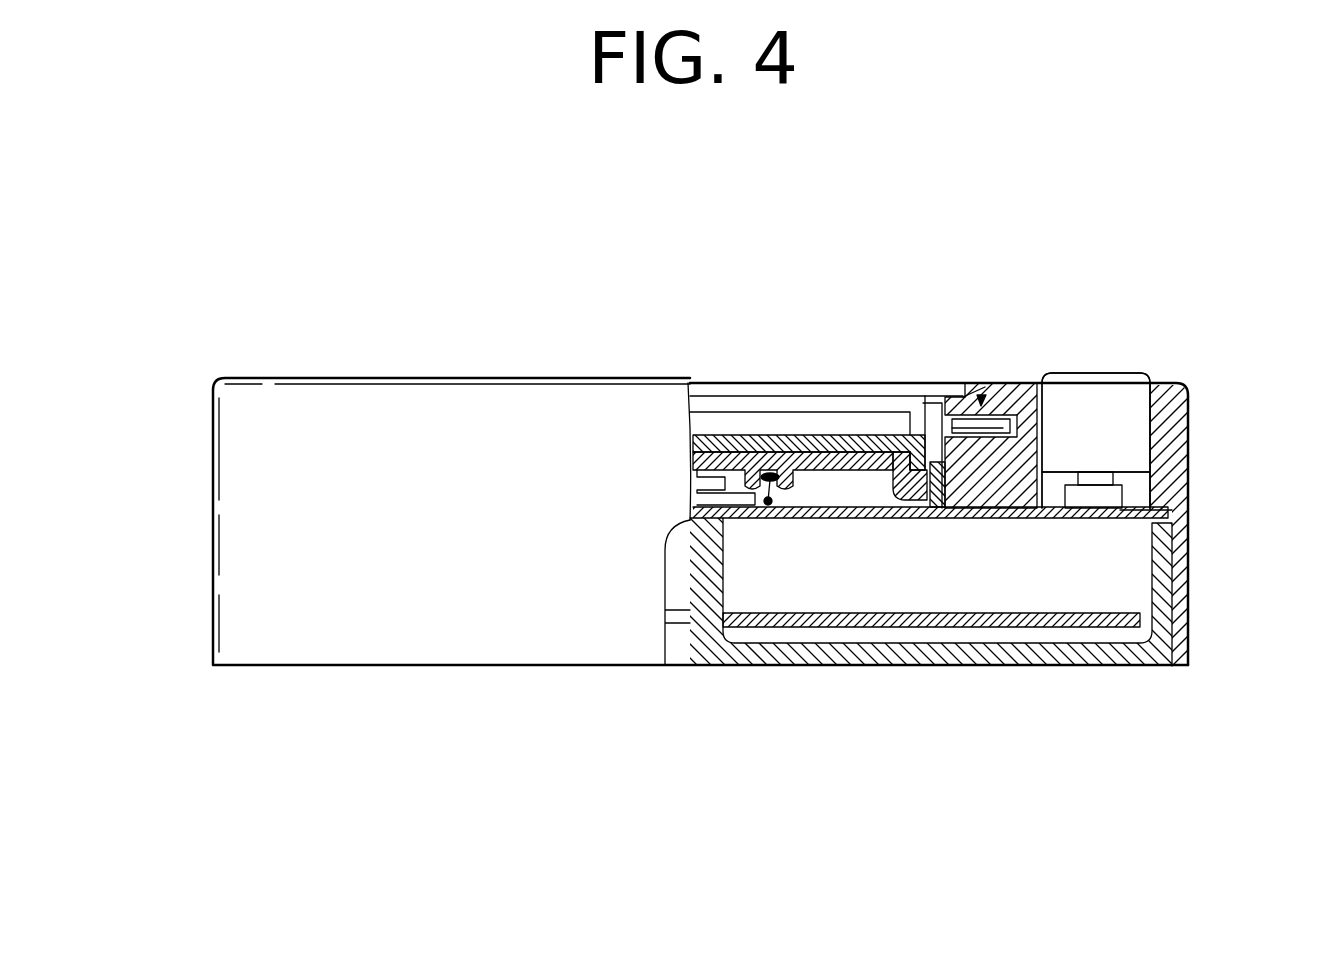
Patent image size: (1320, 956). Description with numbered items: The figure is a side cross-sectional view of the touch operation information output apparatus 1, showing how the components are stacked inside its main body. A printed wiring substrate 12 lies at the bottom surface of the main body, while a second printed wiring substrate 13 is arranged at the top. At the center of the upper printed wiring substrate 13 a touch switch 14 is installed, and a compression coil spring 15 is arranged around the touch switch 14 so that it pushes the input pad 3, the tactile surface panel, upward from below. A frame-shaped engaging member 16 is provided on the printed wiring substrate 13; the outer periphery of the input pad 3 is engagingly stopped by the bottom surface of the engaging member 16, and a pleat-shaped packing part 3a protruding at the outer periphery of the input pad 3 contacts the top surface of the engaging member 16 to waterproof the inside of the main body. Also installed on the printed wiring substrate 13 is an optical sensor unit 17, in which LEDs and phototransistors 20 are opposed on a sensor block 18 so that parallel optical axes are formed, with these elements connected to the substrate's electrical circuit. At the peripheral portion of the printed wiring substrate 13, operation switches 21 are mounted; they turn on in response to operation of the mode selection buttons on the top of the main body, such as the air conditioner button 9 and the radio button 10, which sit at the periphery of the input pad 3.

The touch operation information output apparatus 1 is at (1188, 420).
The input pad 3 is at (823, 435).
The packing part 3a is at (923, 455).
The air conditioner button 9 is at (1103, 372).
The radio button 10 is at (1096, 440).
The printed wiring substrate 12 is at (1052, 628).
The printed wiring substrate 13 is at (1105, 520).
The touch switch 14 is at (730, 435).
The compression coil spring 15 is at (770, 477).
The engaging member 16 is at (935, 490).
The optical sensor unit 17 is at (980, 398).
The sensor block 18 is at (992, 487).
The phototransistors 20 is at (1007, 405).
The operation switches 21 is at (1122, 490).